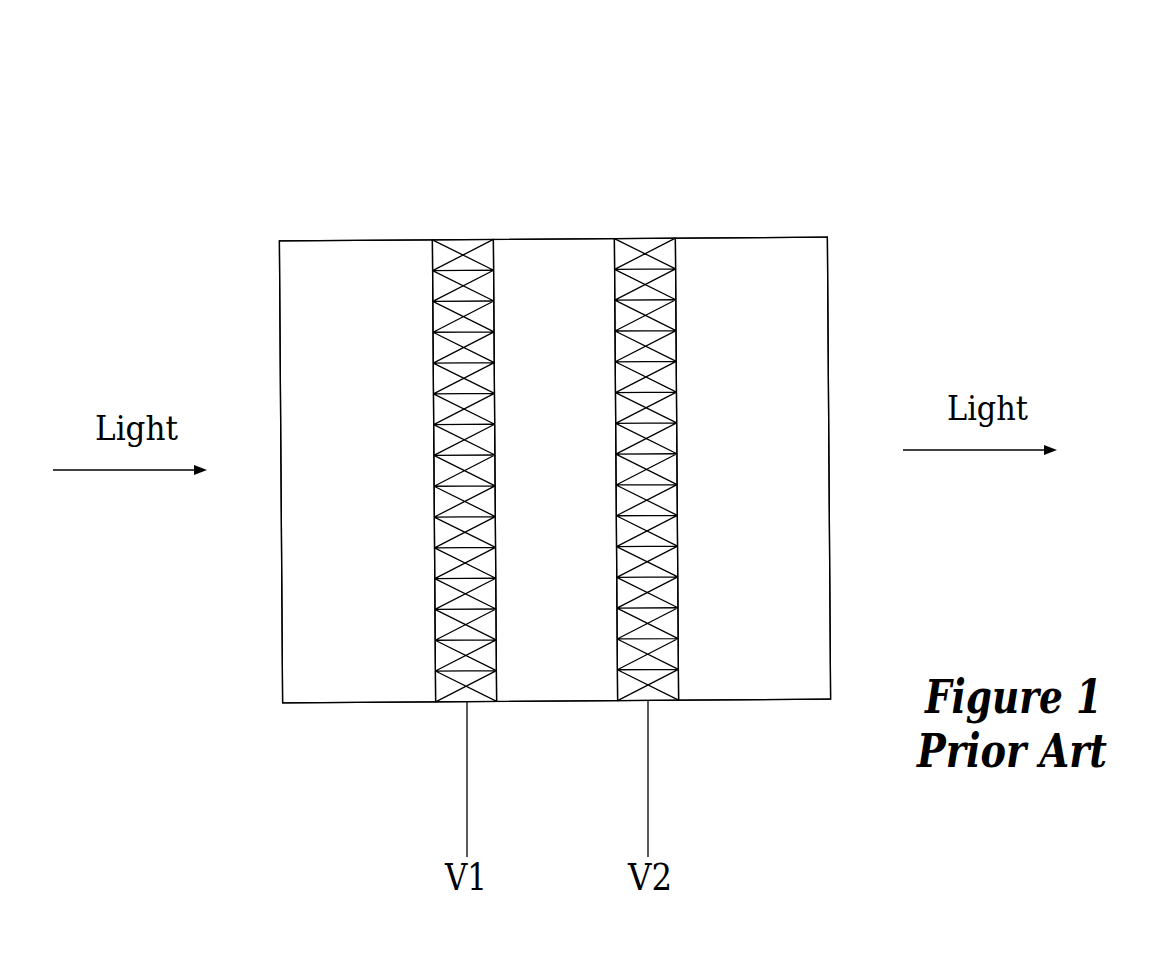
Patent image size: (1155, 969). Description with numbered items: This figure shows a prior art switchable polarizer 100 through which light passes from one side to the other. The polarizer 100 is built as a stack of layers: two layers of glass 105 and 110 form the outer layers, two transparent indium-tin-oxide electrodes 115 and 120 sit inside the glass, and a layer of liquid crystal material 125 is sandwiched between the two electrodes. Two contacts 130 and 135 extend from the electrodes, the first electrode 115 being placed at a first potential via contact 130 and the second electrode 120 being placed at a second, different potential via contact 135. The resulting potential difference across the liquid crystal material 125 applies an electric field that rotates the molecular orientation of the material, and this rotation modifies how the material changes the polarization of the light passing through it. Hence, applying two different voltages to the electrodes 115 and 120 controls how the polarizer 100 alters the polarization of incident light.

The switchable polarizer 100 is at (458, 121).
The layer of glass 105 is at (368, 703).
The layer of glass 110 is at (763, 699).
The transparent ITO electrode 115 is at (455, 240).
The transparent ITO electrode 120 is at (643, 238).
The layer of liquid crystal material 125 is at (537, 238).
The contact 130 is at (467, 762).
The contact 135 is at (648, 762).